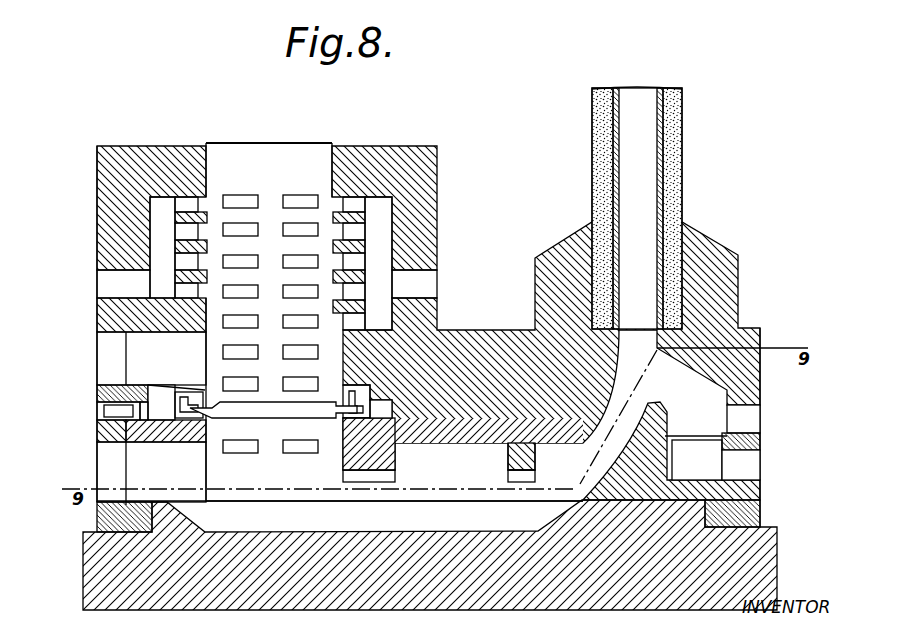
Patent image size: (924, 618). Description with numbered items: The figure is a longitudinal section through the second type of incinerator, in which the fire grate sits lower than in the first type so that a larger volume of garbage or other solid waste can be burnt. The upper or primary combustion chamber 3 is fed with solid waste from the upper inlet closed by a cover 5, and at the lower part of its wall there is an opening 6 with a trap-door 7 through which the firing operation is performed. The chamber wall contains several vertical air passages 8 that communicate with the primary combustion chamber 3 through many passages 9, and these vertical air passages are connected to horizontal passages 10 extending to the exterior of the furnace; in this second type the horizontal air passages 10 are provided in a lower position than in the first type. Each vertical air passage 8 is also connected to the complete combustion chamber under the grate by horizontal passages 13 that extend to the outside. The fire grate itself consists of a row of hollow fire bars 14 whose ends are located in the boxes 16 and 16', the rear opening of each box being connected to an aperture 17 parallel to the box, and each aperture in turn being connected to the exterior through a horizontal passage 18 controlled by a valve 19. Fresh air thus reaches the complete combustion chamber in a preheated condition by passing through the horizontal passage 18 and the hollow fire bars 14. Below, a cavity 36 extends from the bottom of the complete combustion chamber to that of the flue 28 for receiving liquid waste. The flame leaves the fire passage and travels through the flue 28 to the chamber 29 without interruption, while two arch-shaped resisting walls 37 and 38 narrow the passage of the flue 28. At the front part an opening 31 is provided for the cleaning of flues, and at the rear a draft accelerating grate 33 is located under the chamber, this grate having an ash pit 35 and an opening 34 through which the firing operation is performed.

The primary combustion chamber 3 is at (269, 322).
The cover 5 is at (270, 143).
The opening 6 is at (151, 358).
The trap-door 7 is at (97, 364).
The vertical air passages 8 is at (271, 263).
The passages 9 is at (270, 293).
The horizontal passages 10 is at (267, 284).
The horizontal passages 13 is at (243, 450).
The hollow fire bars 14 is at (268, 406).
The box 16 is at (189, 392).
The box 16' is at (369, 386).
The aperture 17 is at (162, 402).
The horizontal passage 18 is at (142, 408).
The valve 19 is at (97, 406).
The flue 28 is at (617, 417).
The chamber 29 is at (637, 208).
The opening 31 is at (95, 448).
The draft accelerating grate 33 is at (695, 439).
The opening 34 is at (757, 425).
The ash pit 35 is at (757, 480).
The cavity 36 is at (430, 555).
The arch-shaped resisting wall 37 is at (369, 450).
The arch-shaped resisting wall 38 is at (521, 462).